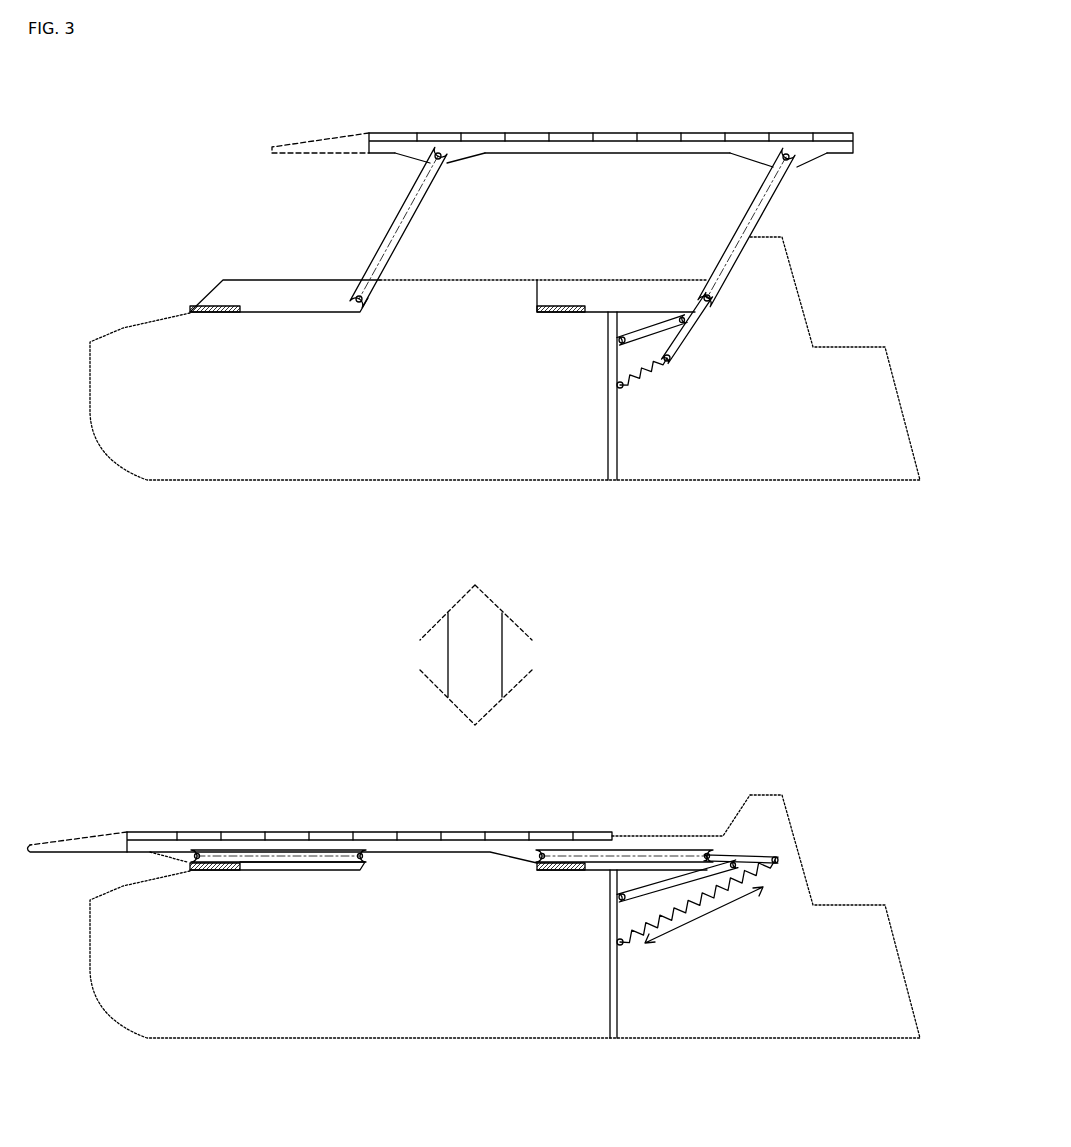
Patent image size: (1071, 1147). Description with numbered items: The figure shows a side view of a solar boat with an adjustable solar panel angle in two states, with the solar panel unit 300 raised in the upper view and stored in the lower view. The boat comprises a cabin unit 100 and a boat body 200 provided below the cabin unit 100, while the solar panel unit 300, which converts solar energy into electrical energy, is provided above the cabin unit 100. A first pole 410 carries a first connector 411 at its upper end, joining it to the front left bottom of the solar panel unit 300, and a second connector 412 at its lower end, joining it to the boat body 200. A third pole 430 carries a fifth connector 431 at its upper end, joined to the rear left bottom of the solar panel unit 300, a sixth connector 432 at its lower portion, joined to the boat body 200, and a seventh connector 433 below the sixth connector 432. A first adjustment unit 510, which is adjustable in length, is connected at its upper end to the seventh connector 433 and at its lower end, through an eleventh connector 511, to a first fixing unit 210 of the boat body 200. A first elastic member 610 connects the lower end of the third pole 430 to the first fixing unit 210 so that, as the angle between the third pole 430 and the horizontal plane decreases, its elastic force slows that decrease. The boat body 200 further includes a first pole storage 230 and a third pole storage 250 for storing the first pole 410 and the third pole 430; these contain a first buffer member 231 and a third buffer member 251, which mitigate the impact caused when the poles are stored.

The cabin unit 100 is at (310, 222).
The boat body 200 is at (257, 450).
The first fixing unit 210 is at (607, 450).
The first pole storage 230 is at (287, 298).
The first buffer member 231 is at (218, 310).
The third pole storage 250 is at (566, 290).
The third buffer member 251 is at (543, 308).
The solar panel unit 300 is at (375, 128).
The first pole 410 is at (378, 270).
The first connector 411 is at (445, 161).
The second connector 412 is at (366, 304).
The third pole 430 is at (770, 200).
The fifth connector 431 is at (792, 161).
The sixth connector 432 is at (709, 301).
The seventh connector 433 is at (690, 326).
The first adjustment unit 510 is at (617, 333).
The eleventh connector 511 is at (617, 345).
The first elastic member 610 is at (650, 378).